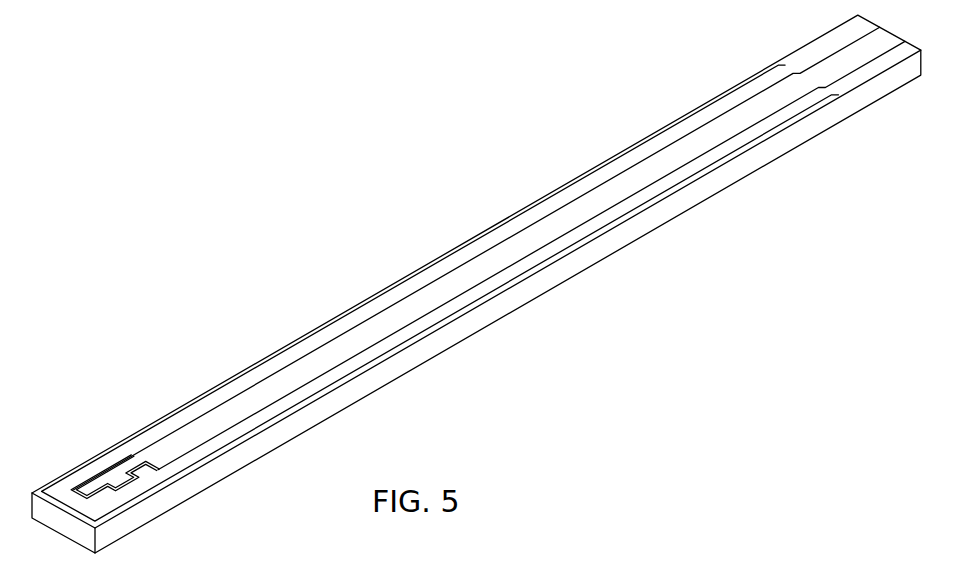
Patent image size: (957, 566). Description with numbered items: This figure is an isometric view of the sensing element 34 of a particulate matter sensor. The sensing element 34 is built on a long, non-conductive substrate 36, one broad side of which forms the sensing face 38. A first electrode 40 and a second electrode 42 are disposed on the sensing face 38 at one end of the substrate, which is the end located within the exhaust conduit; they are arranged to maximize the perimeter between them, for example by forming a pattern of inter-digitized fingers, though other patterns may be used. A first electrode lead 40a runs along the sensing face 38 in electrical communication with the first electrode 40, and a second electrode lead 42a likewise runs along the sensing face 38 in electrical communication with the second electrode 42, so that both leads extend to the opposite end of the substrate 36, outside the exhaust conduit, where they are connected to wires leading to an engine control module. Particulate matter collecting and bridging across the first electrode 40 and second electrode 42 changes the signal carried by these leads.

The sensing element 34 is at (372, 205).
The non-conductive substrate 36 is at (706, 205).
The sensing face 38 is at (175, 438).
The first electrode 40 is at (105, 500).
The first electrode lead 40a is at (245, 380).
The second electrode 42 is at (100, 482).
The second electrode lead 42a is at (330, 378).